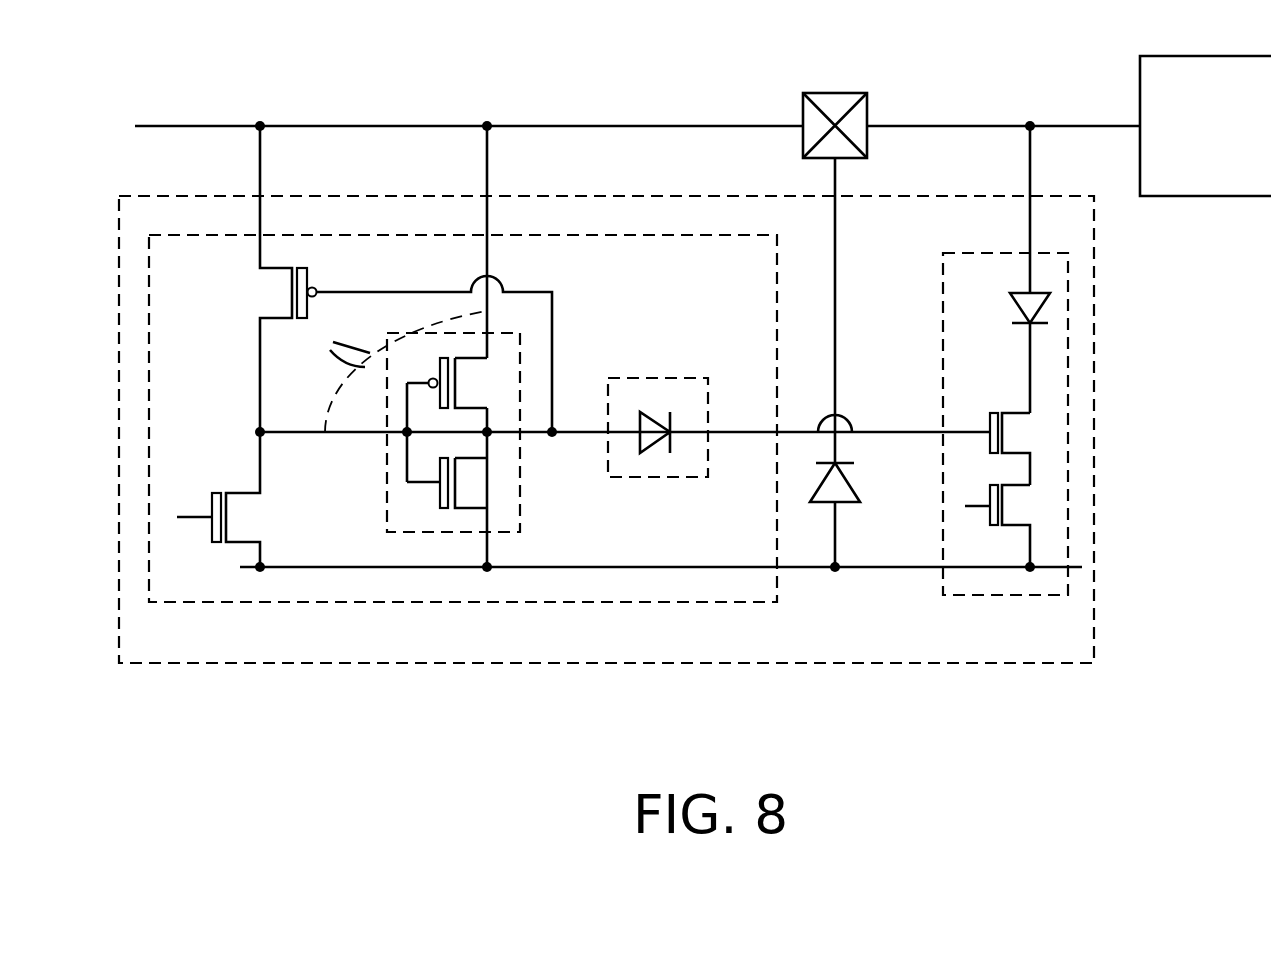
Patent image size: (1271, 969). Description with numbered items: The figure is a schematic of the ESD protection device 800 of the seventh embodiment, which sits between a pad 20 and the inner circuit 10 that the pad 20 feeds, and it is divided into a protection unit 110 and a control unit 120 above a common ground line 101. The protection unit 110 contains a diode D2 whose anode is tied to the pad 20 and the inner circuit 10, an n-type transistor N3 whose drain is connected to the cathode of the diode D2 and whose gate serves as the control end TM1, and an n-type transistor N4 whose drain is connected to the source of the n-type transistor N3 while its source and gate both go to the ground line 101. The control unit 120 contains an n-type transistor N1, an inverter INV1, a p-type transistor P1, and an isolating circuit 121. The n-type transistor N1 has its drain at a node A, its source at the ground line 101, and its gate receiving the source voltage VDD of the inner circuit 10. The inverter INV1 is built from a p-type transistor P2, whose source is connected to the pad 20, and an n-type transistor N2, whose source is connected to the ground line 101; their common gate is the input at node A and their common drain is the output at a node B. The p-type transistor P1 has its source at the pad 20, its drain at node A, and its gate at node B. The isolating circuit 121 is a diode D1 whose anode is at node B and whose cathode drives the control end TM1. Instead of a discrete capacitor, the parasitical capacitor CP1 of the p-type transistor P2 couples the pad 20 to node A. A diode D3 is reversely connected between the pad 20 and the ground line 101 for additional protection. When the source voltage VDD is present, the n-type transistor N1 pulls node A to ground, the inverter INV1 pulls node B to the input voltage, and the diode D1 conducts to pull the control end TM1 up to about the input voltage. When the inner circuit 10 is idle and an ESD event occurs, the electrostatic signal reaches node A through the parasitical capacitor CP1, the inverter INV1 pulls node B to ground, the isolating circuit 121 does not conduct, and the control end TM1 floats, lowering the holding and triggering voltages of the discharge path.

The inner circuit 10 is at (1215, 196).
The pad 20 is at (835, 93).
The ground line 101 is at (812, 567).
The protection unit 110 is at (975, 595).
The control unit 120 is at (695, 602).
The isolating circuit 121 is at (658, 384).
The ESD protection device 800 is at (1095, 490).
The p-type transistor P1 is at (392, 279).
The n-type transistor N1 is at (230, 499).
The p-type transistor P2 is at (458, 304).
The n-type transistor N2 is at (458, 512).
The n-type transistor N3 is at (1025, 449).
The n-type transistor N4 is at (1010, 526).
The diode D1 is at (660, 417).
The diode D2 is at (1010, 269).
The diode D3 is at (858, 515).
The parasitical capacitor CP1 is at (384, 371).
The inverter INV1 is at (511, 346).
The control end TM1 is at (907, 430).
The node A is at (258, 432).
The node B is at (553, 432).
The source voltage VDD is at (184, 499).